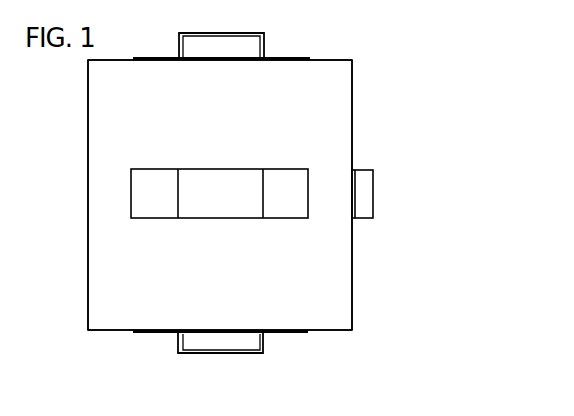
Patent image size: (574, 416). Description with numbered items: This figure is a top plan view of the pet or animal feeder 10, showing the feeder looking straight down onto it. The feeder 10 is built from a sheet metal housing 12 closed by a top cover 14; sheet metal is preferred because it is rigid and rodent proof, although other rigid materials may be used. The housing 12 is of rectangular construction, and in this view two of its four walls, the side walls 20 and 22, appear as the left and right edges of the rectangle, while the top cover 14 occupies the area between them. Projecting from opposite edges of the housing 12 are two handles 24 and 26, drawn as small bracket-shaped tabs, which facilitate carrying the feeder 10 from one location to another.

The pet or animal feeder 10 is at (368, 80).
The sheet metal housing 12 is at (82, 131).
The top cover 14 is at (308, 73).
The side wall 20 is at (88, 291).
The side wall 22 is at (352, 292).
The handle 24 is at (258, 353).
The handle 26 is at (227, 33).